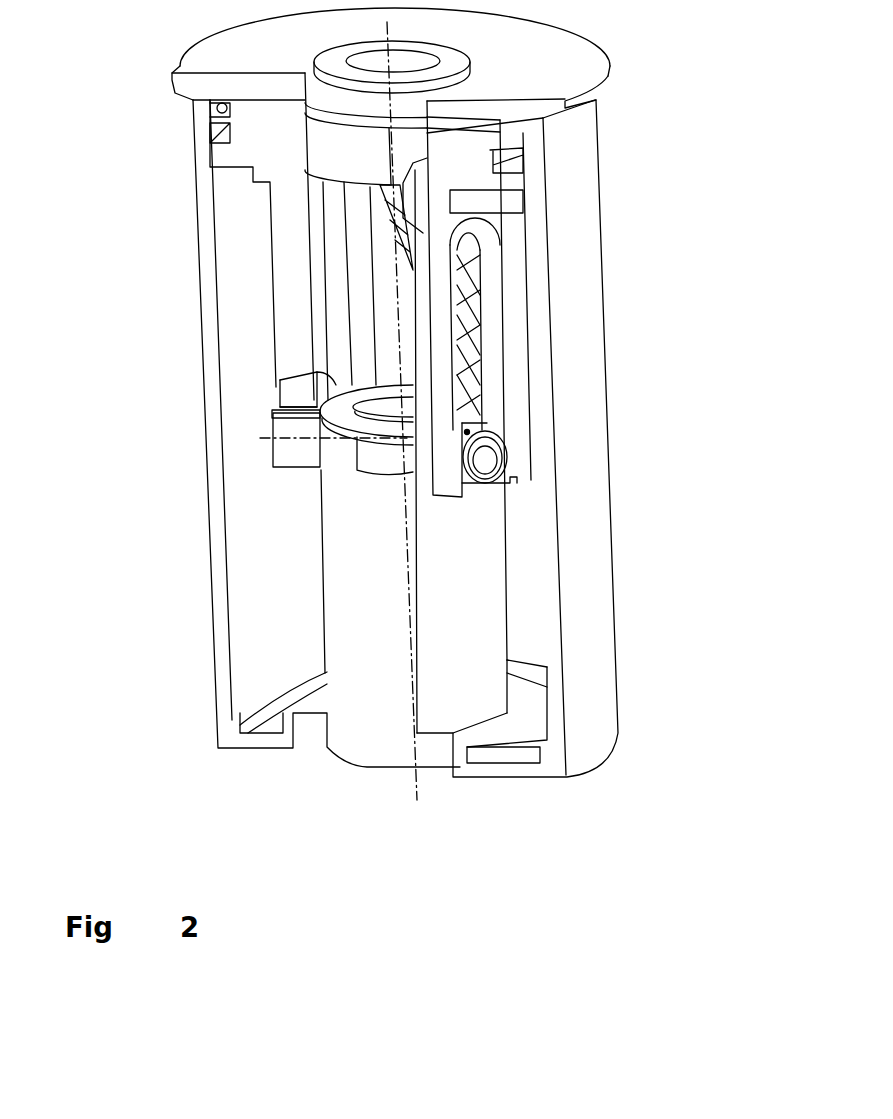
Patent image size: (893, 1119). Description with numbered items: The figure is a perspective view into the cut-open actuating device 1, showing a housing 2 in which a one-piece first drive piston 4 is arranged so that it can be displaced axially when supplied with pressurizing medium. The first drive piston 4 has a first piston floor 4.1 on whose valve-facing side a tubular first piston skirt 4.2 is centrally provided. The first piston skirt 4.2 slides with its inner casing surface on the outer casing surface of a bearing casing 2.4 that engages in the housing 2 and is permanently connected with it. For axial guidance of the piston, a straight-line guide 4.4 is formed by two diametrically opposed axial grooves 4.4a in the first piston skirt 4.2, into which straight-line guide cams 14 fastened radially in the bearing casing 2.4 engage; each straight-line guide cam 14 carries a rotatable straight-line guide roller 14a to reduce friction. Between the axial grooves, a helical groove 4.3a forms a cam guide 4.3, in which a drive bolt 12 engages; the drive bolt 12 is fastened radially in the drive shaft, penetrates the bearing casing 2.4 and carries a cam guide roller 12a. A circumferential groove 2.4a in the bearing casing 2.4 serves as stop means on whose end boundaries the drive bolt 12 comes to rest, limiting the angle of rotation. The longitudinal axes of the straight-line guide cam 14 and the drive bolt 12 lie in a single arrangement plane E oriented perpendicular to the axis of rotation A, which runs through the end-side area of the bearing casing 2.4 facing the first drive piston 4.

The actuating device 1 is at (622, 775).
The housing 2 is at (622, 553).
The bearing casing 2.4 is at (376, 582).
The circumferential groove 2.4a is at (346, 470).
The first drive piston 4 is at (99, 257).
The first piston floor 4.1 is at (270, 132).
The first piston skirt 4.2 is at (288, 257).
The cam guide 4.3 is at (285, 387).
The helical groove 4.3a is at (296, 400).
The straight-line guide 4.4 is at (334, 198).
The axial groove 4.4a is at (323, 253).
The drive bolt 12 is at (290, 449).
The cam guide roller 12a is at (285, 414).
The straight-line guide cam 14 is at (490, 451).
The straight-line guide roller 14a is at (469, 432).
The axis of rotation A is at (414, 783).
The arrangement plane E is at (258, 439).